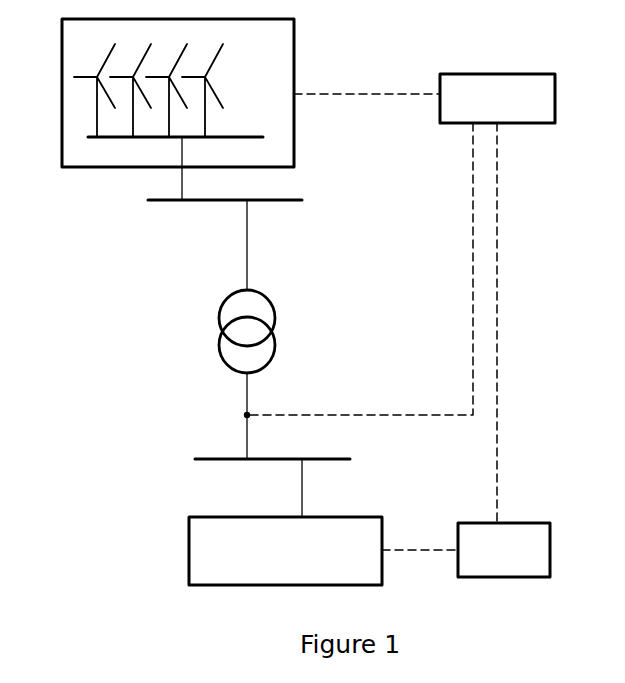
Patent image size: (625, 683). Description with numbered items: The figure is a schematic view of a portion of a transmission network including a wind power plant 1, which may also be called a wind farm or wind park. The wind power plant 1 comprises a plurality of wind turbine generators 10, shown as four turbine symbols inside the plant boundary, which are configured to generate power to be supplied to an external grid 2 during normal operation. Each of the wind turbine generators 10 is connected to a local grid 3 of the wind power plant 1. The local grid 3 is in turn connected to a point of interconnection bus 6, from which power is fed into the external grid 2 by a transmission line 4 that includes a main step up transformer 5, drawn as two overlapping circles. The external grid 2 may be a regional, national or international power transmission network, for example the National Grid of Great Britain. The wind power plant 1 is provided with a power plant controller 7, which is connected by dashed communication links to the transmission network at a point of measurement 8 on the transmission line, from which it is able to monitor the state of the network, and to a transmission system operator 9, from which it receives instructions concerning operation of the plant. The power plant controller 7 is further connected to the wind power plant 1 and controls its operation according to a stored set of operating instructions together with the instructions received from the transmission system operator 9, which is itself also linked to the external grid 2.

The wind power plant 1 is at (62, 65).
The external grid 2 is at (189, 550).
The local grid 3 is at (115, 142).
The transmission line 4 is at (248, 262).
The main step up transformer 5 is at (222, 308).
The point of interconnection bus 6 is at (182, 192).
The power plant controller 7 is at (535, 74).
The point of measurement 8 is at (243, 413).
The transmission system operator 9 is at (527, 523).
The wind turbine generator 10 is at (205, 120).